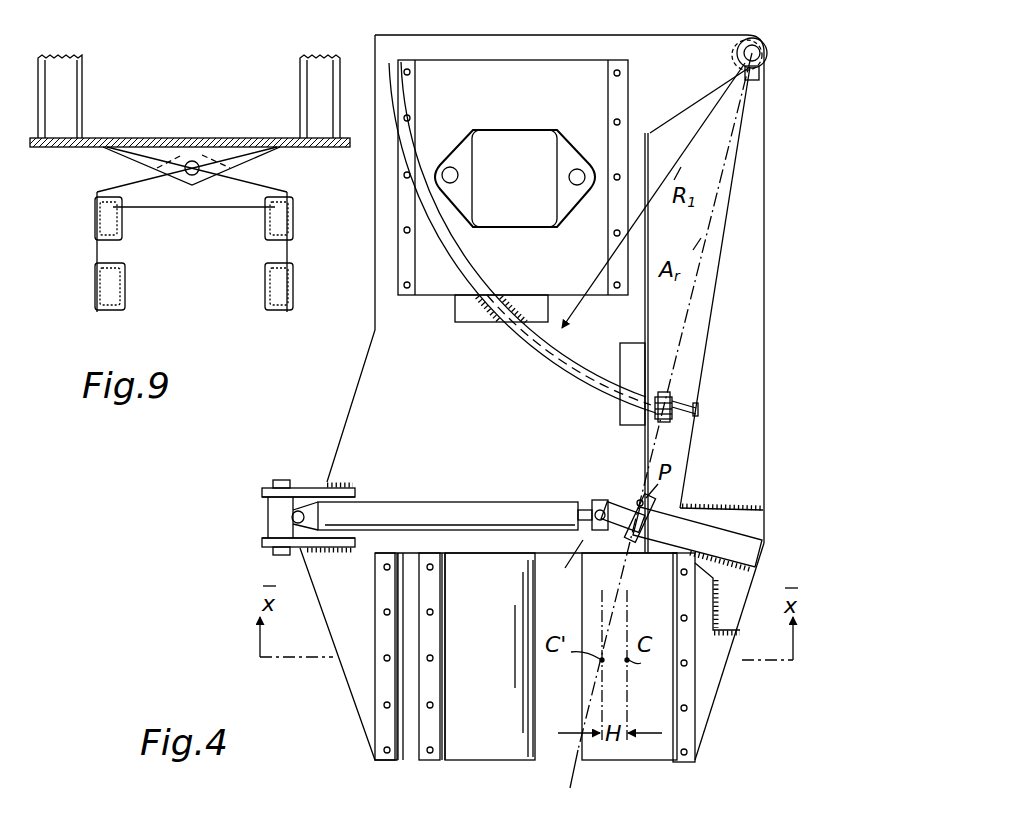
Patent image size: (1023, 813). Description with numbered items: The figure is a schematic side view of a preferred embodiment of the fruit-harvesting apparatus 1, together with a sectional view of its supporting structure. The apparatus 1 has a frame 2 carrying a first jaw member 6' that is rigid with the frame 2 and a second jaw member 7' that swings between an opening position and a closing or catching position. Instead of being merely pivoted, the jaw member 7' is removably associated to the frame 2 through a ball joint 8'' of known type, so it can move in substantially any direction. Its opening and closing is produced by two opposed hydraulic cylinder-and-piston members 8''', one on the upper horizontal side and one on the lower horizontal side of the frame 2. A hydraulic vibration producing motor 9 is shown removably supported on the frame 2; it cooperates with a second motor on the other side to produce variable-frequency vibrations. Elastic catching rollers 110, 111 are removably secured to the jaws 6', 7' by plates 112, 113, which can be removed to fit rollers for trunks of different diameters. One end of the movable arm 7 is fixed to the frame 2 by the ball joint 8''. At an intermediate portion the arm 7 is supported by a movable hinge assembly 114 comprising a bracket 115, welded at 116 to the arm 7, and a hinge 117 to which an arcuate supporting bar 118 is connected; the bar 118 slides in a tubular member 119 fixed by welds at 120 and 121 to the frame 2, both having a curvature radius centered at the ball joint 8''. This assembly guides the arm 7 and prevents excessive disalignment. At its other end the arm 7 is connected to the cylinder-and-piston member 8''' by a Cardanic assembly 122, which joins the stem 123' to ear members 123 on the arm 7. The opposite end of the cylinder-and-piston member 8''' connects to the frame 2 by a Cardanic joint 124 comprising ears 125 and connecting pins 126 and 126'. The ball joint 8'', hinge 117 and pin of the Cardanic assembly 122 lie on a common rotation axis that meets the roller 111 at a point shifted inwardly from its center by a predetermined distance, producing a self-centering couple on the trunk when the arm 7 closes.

In FIG. 4, the apparatus 1 is at (363, 340).
In FIG. 4, the frame 2 is at (583, 34).
In FIG. 4, the first jaw member 6' is at (348, 654).
In FIG. 4, the movable arm 7 is at (719, 302).
In FIG. 4, the second jaw member 7' is at (729, 651).
In FIG. 4, the ball joint 8'' is at (765, 71).
In FIG. 4, the hydraulic cylinder-and-piston member 8''' is at (455, 495).
In FIG. 4, the hydraulic vibration producing motor 9 is at (495, 138).
In FIG. 4, the catching roller 110 is at (473, 750).
In FIG. 4, the catching roller 111 is at (660, 753).
In FIG. 4, the plate 112 is at (410, 742).
In FIG. 4, the plate 113 is at (688, 752).
In FIG. 4, the movable hinge assembly 114 is at (682, 386).
In FIG. 4, the bracket 115 is at (684, 420).
In FIG. 4, the weld 116 is at (698, 408).
In FIG. 9, the hinge 117 is at (194, 162).
In FIG. 4, the hinge 117 is at (659, 394).
In FIG. 4, the supporting bar 118 is at (462, 267).
In FIG. 4, the tubular member 119 is at (523, 347).
In FIG. 4, the weld 120 is at (478, 313).
In FIG. 4, the weld 121 is at (622, 415).
In FIG. 4, the Cardanic assembly 122 is at (616, 497).
In FIG. 4, the ear member 123 is at (722, 538).
In FIG. 4, the stem 123' is at (559, 572).
In FIG. 4, the Cardanic joint 124 is at (304, 480).
In FIG. 4, the ear 125 is at (263, 491).
In FIG. 4, the connecting pin 126 is at (266, 499).
In FIG. 4, the connecting pin 126' is at (251, 521).